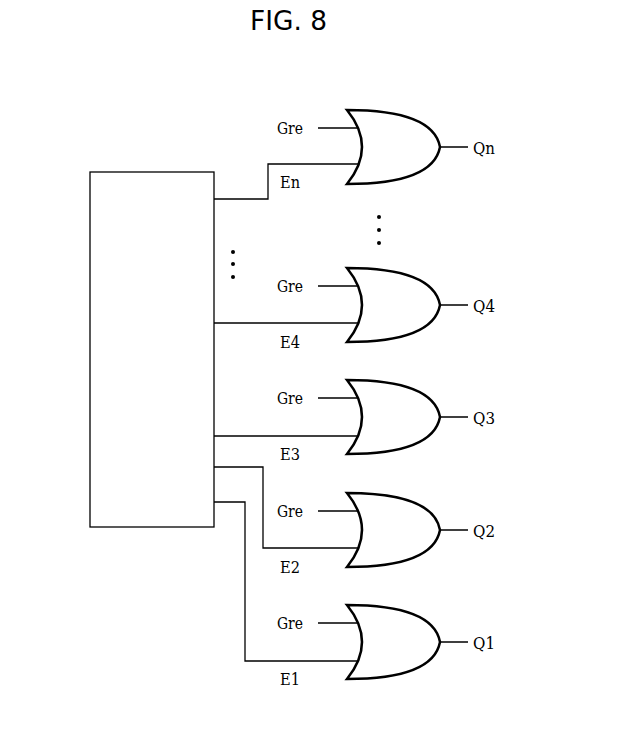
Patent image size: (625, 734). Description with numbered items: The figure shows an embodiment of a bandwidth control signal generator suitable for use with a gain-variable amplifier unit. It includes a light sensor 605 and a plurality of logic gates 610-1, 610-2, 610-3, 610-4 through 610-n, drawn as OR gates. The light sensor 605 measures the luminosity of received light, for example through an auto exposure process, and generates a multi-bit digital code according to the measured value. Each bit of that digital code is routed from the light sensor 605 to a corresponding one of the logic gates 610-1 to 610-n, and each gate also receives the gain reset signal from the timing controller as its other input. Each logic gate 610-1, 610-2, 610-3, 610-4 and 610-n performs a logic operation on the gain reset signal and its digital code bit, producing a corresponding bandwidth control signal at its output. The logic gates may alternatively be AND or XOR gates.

The light sensor 605 is at (150, 172).
The logic gate 610-n is at (416, 118).
The logic gate 610-4 is at (416, 276).
The logic gate 610-3 is at (416, 388).
The logic gate 610-2 is at (416, 501).
The logic gate 610-1 is at (416, 613).